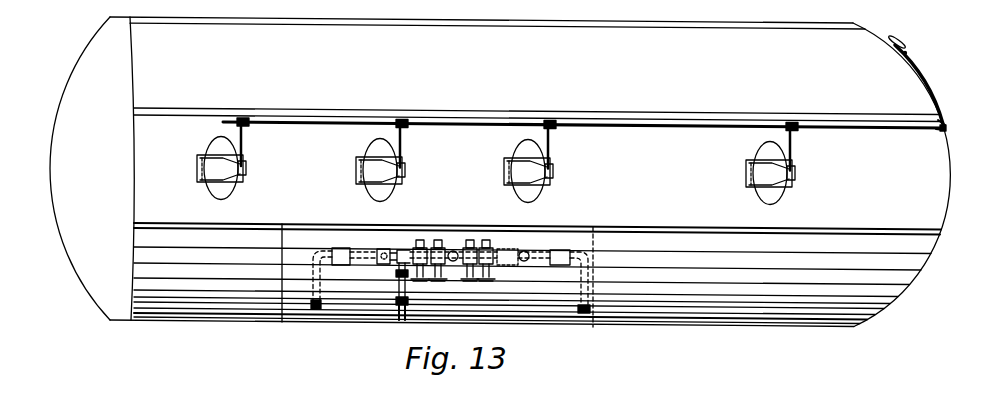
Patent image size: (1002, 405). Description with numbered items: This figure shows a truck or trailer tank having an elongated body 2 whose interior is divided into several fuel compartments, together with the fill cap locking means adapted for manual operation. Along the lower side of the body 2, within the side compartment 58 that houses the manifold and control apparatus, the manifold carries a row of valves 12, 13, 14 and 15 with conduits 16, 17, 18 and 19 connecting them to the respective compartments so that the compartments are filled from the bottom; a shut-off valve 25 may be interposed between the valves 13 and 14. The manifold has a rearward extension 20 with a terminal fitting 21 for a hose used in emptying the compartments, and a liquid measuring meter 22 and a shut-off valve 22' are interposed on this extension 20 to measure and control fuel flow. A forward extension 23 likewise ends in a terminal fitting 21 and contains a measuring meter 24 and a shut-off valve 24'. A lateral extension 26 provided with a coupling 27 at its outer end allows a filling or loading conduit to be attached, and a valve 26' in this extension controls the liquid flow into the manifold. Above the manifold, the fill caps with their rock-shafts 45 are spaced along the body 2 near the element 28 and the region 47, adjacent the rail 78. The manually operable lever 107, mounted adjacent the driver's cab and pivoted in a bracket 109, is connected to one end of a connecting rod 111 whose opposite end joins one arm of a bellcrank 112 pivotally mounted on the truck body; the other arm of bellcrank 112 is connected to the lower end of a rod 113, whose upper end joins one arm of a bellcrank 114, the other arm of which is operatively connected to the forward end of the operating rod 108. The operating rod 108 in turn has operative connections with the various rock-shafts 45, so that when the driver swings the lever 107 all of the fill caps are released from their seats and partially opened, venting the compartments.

The elongated body 2 is at (928, 258).
The valve 12 is at (414, 247).
The valve 13 is at (448, 246).
The valve 14 is at (484, 246).
The valve 15 is at (493, 272).
The conduit 16 is at (425, 246).
The conduit 17 is at (438, 246).
The conduit 18 is at (471, 246).
The conduit 19 is at (498, 247).
The rearward extension 20 is at (368, 247).
The terminal fitting 21 is at (312, 312).
The liquid measuring meter 22 is at (331, 252).
The shut-off valve 22' is at (386, 236).
The forward extension 23 is at (584, 245).
The measuring meter 24 is at (570, 236).
The shut-off valve 24' is at (538, 233).
The shut-off valve 25 is at (456, 248).
The lateral extension 26 is at (415, 323).
The valve 26' is at (387, 275).
The coupling 27 is at (399, 310).
The nozzle head 28 is at (237, 186).
The rock-shaft 45 is at (245, 146).
The tank interior 47 is at (672, 172).
The side compartment 58 is at (281, 256).
The track 78 is at (635, 117).
The manually operable lever 107 is at (902, 46).
The operating rod 108 is at (316, 124).
The bracket 109 is at (912, 56).
The connecting rod 111 is at (926, 85).
The bellcrank 112 is at (947, 122).
The rod 113 is at (949, 128).
The bellcrank 114 is at (944, 132).